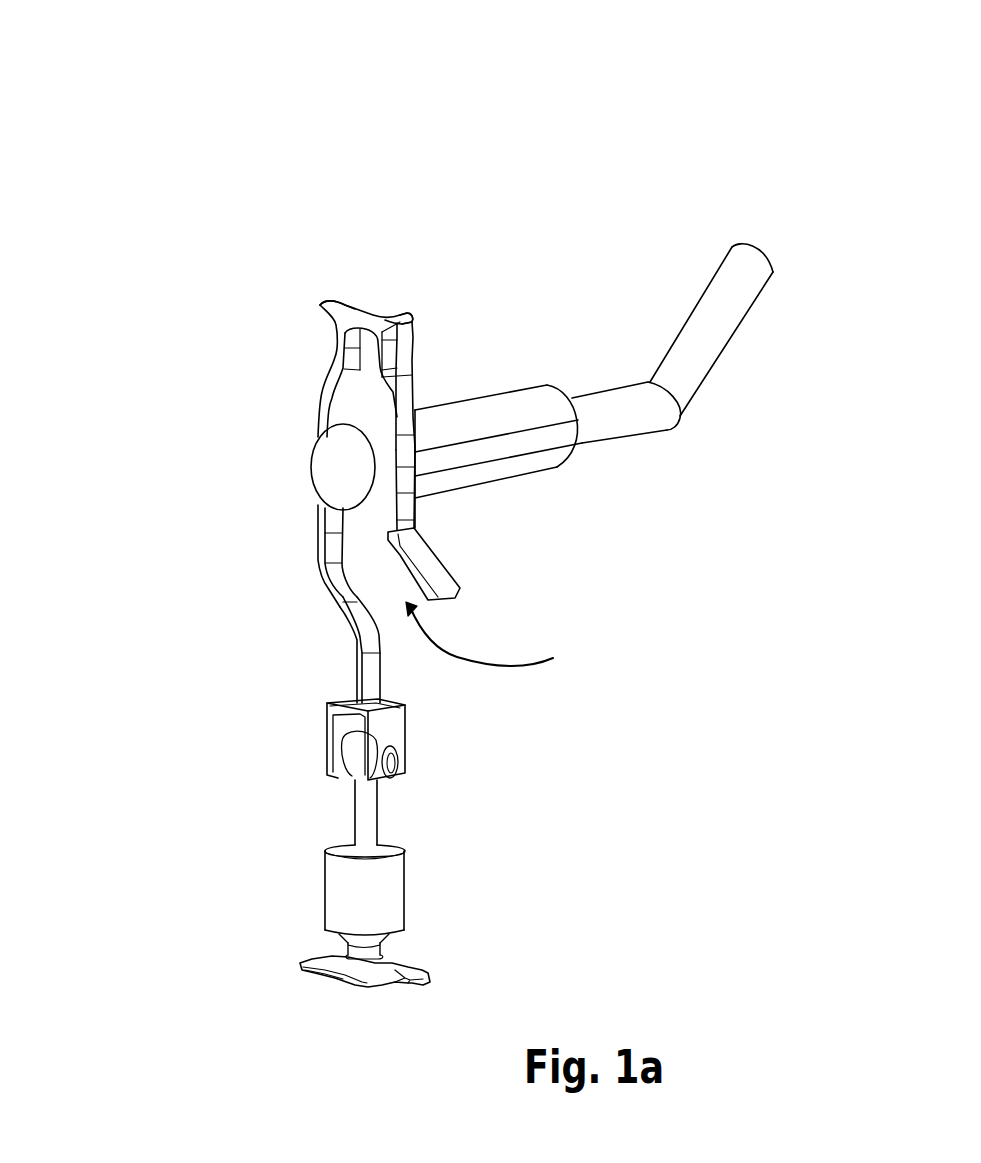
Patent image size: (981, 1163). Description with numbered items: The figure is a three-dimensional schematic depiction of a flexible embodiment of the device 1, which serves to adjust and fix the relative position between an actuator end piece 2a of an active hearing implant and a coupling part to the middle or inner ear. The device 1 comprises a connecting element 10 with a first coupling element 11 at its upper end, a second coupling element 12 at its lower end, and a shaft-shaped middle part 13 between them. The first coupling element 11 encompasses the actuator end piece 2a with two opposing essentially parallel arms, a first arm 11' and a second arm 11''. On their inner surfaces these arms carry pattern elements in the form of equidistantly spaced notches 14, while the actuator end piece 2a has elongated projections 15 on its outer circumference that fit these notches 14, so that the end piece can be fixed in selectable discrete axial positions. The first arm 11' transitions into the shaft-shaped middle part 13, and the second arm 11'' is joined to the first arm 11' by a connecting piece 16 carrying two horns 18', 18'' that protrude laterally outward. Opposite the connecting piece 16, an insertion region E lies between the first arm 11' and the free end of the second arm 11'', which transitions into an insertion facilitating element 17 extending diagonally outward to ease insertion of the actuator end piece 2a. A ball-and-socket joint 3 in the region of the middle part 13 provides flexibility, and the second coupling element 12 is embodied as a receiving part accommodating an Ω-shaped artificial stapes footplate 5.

The device 1 is at (199, 226).
The actuator end piece 2a is at (487, 400).
The ball-and-socket joint 3 is at (355, 750).
The Ω-shaped artificial stapes footplate 5 is at (300, 972).
The connecting element 10 is at (345, 622).
The first coupling element 11 is at (263, 375).
The first arm 11' is at (228, 556).
The second arm 11'' is at (504, 502).
The second coupling element 12 is at (347, 889).
The shaft-shaped middle part 13 is at (356, 684).
The notches 14 is at (390, 517).
The elongated projections 15 is at (518, 443).
The connecting piece 16 is at (361, 328).
The insertion facilitating element 17 is at (435, 573).
The horn 18' is at (320, 238).
The horn 18'' is at (426, 244).
The insertion region E is at (498, 640).